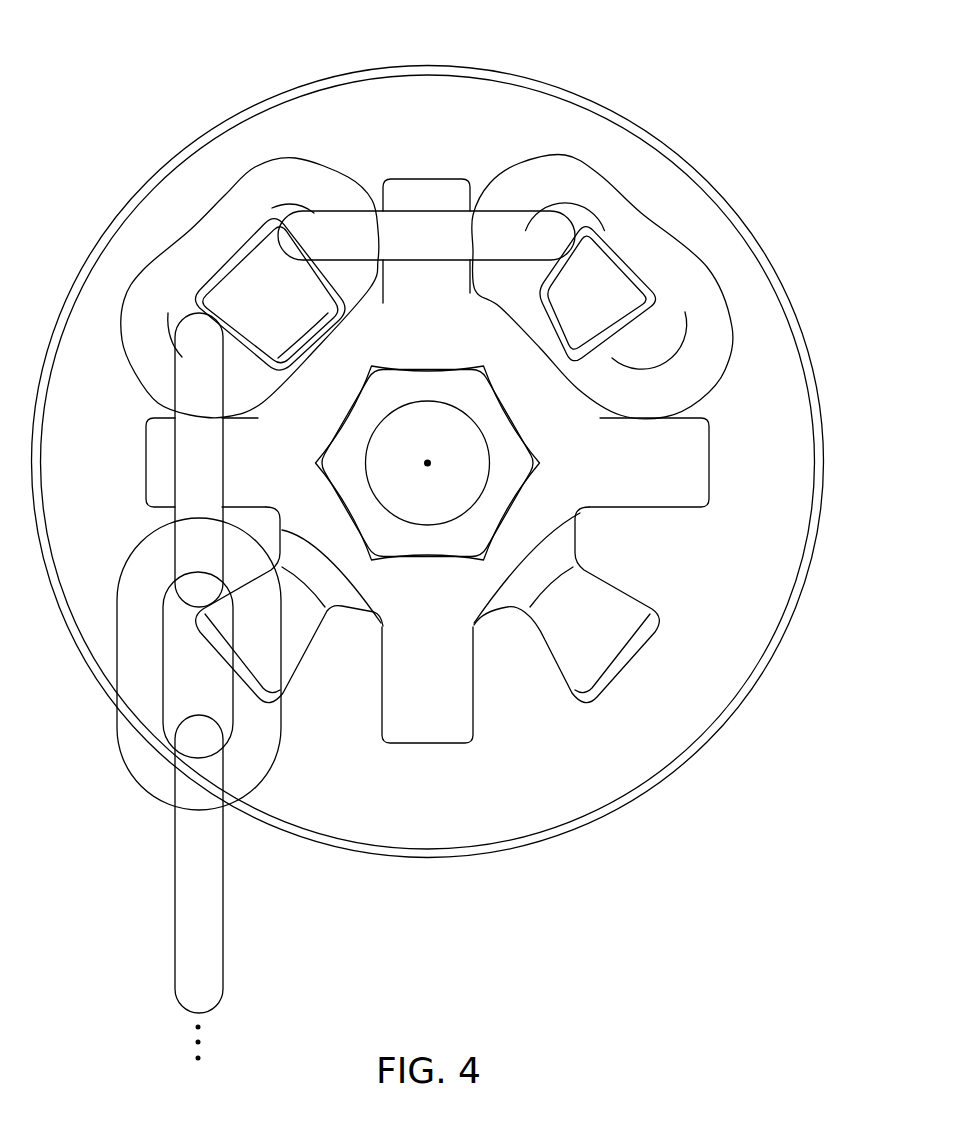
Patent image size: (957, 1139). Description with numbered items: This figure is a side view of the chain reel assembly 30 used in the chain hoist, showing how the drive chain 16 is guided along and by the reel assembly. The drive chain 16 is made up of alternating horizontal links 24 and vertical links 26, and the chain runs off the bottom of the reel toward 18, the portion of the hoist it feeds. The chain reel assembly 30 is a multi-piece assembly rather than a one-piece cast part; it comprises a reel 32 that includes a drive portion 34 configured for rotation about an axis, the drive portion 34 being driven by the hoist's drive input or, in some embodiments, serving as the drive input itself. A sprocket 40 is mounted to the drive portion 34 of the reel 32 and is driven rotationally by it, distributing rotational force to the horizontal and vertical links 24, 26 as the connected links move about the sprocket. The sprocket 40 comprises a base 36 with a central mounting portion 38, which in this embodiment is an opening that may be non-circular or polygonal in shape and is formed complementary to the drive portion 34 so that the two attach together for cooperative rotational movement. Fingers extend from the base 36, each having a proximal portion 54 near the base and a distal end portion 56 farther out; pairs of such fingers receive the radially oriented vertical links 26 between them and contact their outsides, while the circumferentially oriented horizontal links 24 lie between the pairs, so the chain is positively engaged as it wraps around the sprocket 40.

The drive chain 16 is at (421, 575).
The load (to 18) 18 is at (147, 992).
The horizontal links 24 is at (409, 220).
The vertical links 26 is at (222, 224).
The chain reel assembly 30 is at (232, 84).
The reel 32 is at (585, 103).
The drive portion 34 is at (407, 533).
The base 36 is at (433, 535).
The central mounting portion 38 is at (457, 572).
The sprocket 40 is at (692, 522).
The proximal portion 54 is at (593, 554).
The distal end portion 56 is at (677, 618).